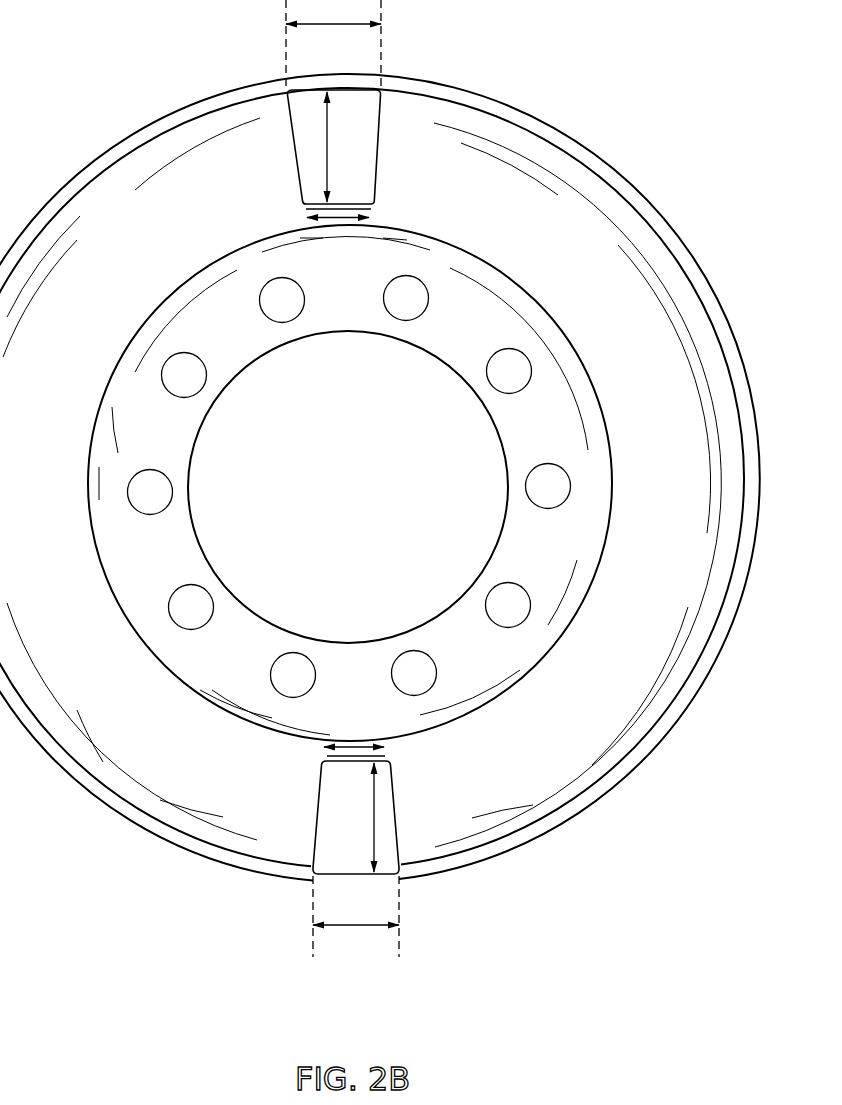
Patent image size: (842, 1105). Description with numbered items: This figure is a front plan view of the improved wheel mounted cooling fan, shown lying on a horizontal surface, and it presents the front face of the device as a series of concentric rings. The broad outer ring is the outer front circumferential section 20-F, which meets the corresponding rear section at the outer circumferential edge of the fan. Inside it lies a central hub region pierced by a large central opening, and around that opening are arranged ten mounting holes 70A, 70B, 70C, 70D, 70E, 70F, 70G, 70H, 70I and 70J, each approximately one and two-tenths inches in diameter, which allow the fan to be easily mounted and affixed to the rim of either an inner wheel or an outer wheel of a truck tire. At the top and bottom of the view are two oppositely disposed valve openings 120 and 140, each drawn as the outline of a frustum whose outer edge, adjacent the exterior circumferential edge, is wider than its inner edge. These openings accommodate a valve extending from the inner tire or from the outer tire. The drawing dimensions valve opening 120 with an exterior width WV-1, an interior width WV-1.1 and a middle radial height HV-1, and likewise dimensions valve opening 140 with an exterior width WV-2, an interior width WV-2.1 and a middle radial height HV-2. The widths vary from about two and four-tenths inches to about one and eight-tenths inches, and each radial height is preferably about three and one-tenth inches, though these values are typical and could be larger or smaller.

The outer front circumferential section 20-F is at (661, 205).
The mounting hole 70A is at (288, 302).
The mounting hole 70B is at (183, 378).
The mounting hole 70C is at (152, 494).
The mounting hole 70D is at (193, 610).
The mounting hole 70E is at (290, 676).
The mounting hole 70F is at (412, 674).
The mounting hole 70G is at (510, 607).
The mounting hole 70H is at (548, 490).
The mounting hole 70I is at (513, 370).
The mounting hole 70J is at (407, 300).
The valve opening 120 is at (372, 191).
The valve opening 140 is at (371, 826).
The middle radial height HV-1 is at (328, 137).
The middle radial height HV-2 is at (374, 838).
The exterior width WV-1 is at (333, 44).
The exterior width WV-2 is at (356, 916).
The interior width WV-1.1 is at (307, 212).
The interior width WV-2.1 is at (384, 749).